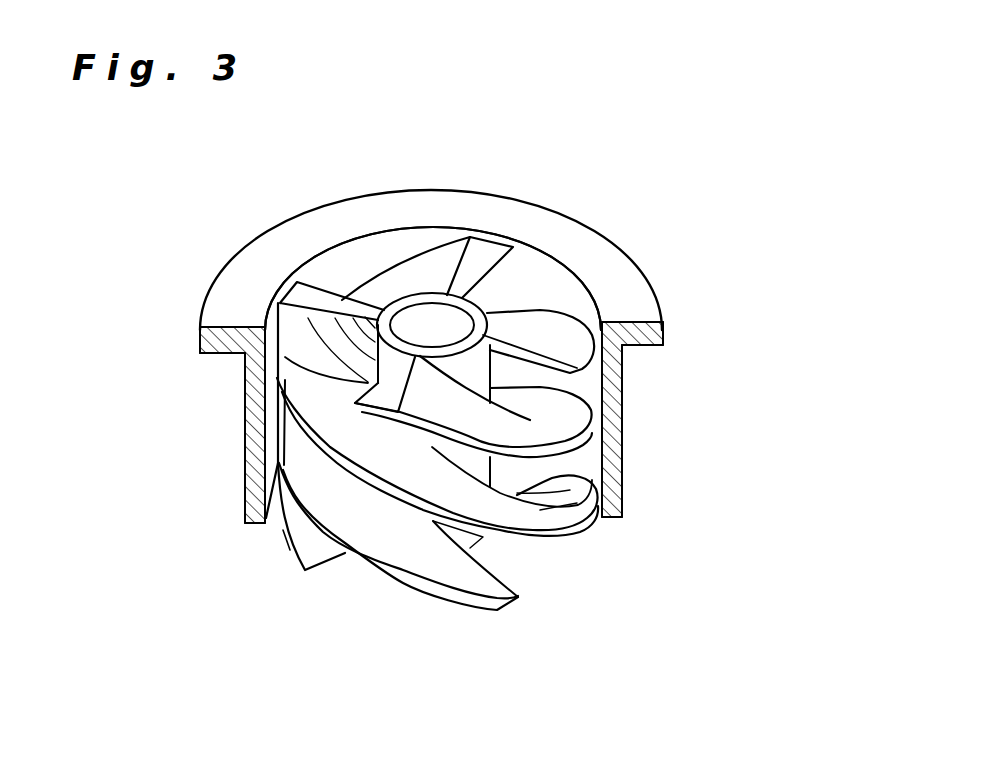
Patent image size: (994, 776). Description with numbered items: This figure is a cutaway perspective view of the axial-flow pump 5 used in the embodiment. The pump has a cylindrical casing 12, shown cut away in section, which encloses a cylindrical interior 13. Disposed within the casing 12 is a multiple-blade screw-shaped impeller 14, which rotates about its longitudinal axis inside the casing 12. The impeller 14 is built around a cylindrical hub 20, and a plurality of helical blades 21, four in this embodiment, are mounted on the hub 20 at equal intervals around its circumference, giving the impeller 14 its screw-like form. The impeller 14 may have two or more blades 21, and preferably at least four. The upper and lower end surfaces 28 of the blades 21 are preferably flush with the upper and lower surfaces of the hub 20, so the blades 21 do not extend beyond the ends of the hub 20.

The axial-flow pump 5 is at (372, 188).
The cylindrical casing 12 is at (587, 265).
The cylindrical interior 13 is at (525, 273).
The cylindrical hub 20 is at (414, 297).
The helical blades 21 is at (570, 333).
The multiple-blade screw-shaped impeller 14 is at (507, 607).
The upper and lower end surfaces 28 is at (318, 565).